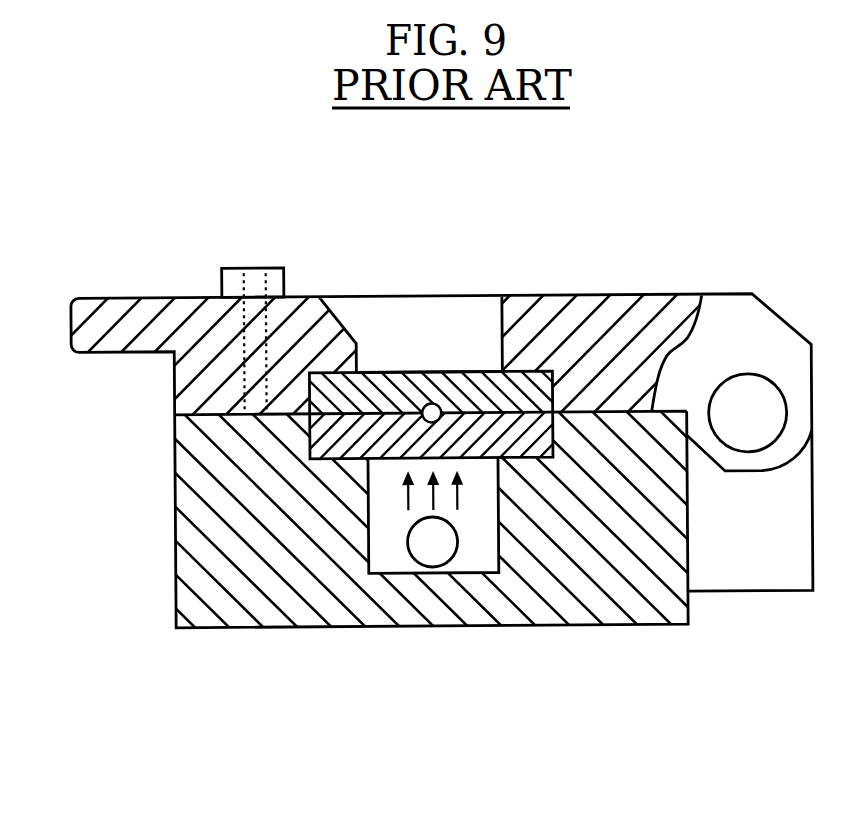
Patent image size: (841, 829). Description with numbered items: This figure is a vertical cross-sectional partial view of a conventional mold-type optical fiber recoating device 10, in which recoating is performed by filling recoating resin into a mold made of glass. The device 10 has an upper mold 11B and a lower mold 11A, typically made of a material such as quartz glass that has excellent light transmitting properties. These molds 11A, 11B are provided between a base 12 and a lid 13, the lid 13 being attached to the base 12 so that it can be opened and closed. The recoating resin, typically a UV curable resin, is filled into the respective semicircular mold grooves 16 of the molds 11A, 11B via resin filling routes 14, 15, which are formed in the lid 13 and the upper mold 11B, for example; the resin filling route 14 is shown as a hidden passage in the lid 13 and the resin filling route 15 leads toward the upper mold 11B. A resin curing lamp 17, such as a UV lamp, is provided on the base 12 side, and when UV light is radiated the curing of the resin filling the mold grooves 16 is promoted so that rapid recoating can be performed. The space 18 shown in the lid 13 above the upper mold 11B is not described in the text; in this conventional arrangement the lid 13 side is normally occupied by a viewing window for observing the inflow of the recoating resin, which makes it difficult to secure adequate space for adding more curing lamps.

The recoating device 10 is at (170, 245).
The lower mold 11A is at (335, 462).
The upper mold 11B is at (413, 370).
The base 12 is at (620, 626).
The lid 13 is at (622, 296).
The resin filling route 14 is at (245, 387).
The resin filling route 15 is at (371, 387).
The semicircular mold groove 16 is at (436, 404).
The resin curing lamp 17 is at (457, 545).
The recess space 18 is at (500, 313).